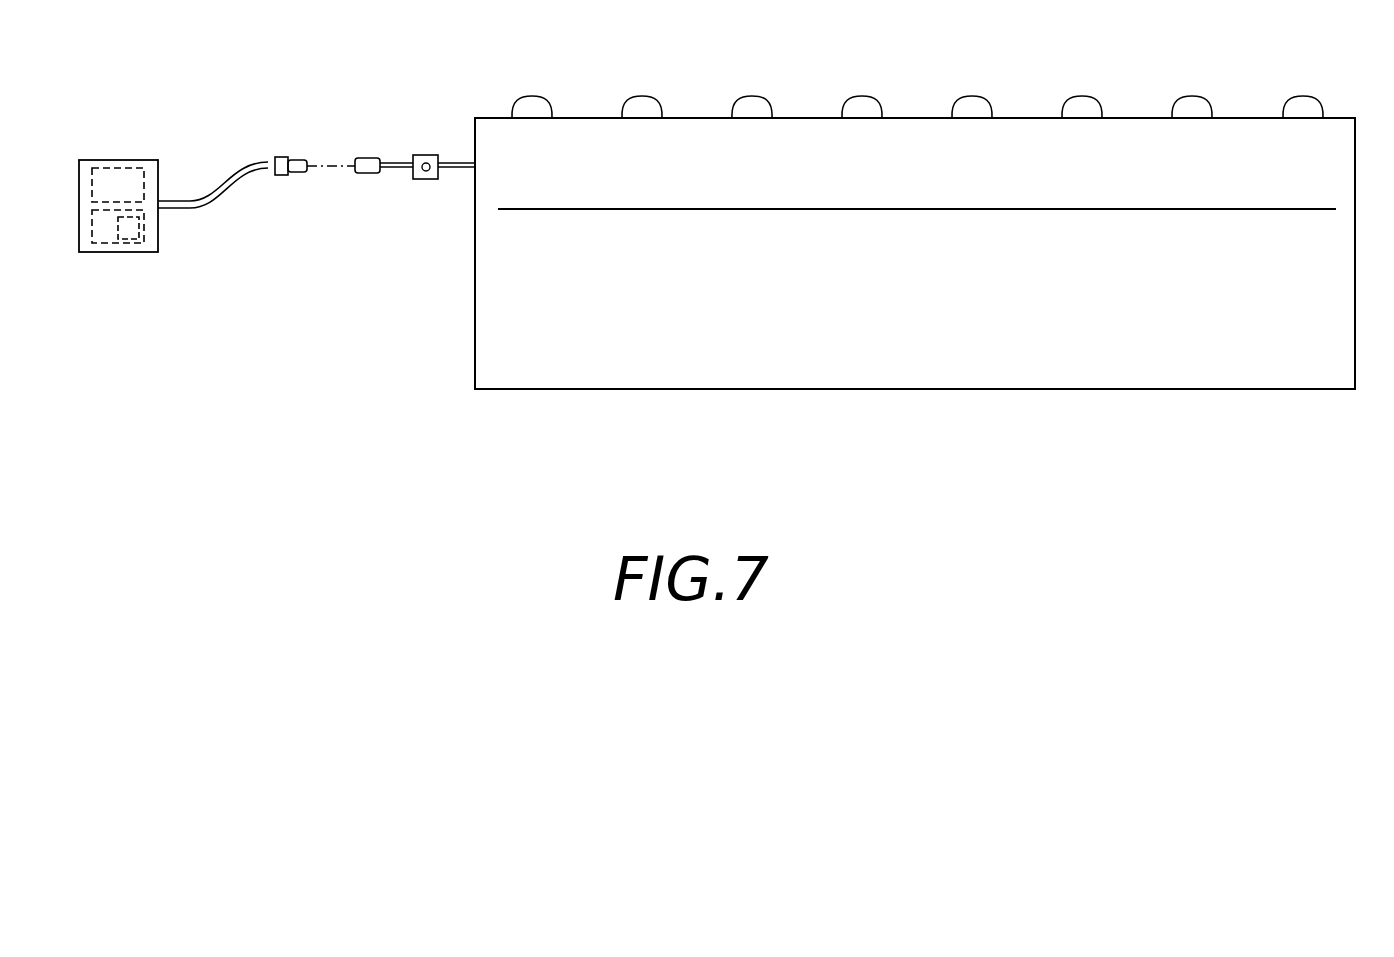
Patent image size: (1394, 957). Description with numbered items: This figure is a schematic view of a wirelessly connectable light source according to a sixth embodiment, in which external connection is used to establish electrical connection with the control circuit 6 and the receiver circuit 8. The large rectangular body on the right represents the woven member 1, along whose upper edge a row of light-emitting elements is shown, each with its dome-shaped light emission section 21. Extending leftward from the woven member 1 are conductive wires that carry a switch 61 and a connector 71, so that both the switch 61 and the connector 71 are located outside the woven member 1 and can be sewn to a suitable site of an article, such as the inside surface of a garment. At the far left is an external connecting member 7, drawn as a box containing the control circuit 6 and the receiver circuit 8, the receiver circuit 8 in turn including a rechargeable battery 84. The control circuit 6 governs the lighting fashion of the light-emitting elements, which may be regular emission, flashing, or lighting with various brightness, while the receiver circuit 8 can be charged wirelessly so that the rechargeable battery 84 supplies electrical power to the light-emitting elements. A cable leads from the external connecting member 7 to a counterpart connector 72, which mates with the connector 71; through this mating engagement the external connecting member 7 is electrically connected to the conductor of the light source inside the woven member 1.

The woven member 1 is at (446, 97).
The light emission section 21 is at (866, 107).
The external connecting member 7 is at (121, 160).
The control circuit 6 is at (100, 183).
The receiver circuit 8 is at (100, 225).
The rechargeable battery 84 is at (127, 234).
The counterpart connector 72 is at (283, 157).
The connector 71 is at (368, 174).
The switch 61 is at (426, 180).